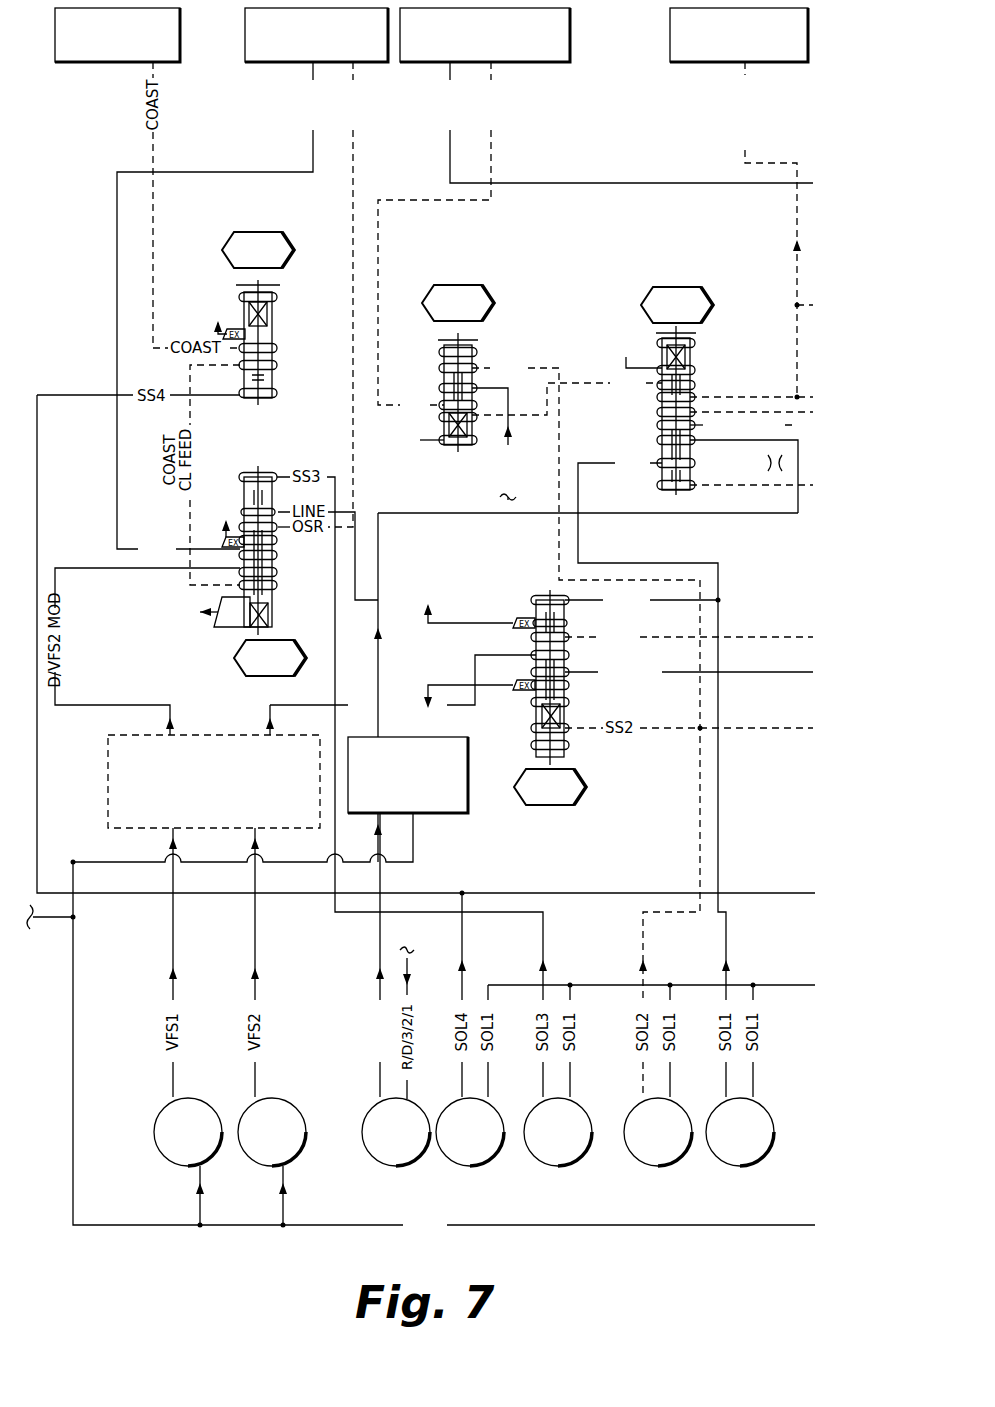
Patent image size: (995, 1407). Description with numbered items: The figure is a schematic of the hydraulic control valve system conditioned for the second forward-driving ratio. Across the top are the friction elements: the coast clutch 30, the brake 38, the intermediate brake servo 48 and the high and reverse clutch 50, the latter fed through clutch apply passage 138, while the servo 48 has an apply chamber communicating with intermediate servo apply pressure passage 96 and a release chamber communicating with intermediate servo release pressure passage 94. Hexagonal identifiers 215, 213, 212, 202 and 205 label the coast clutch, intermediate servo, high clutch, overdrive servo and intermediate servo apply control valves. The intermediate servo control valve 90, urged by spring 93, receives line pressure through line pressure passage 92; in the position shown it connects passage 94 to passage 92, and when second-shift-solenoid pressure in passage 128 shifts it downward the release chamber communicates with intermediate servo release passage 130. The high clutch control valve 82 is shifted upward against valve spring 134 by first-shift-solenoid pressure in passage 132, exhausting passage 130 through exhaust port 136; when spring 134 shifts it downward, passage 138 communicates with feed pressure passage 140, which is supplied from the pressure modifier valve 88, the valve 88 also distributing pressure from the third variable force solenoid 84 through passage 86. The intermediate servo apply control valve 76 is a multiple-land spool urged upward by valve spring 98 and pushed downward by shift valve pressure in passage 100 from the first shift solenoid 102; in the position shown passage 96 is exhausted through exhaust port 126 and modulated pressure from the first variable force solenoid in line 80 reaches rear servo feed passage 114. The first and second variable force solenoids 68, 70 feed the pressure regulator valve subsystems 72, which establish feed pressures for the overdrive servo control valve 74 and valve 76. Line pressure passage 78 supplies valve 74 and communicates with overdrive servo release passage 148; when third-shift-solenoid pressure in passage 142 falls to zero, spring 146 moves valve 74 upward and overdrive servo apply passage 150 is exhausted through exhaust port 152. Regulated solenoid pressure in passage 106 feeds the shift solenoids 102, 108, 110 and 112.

The coast clutch 30 is at (92, 64).
The brake 38 is at (287, 64).
The intermediate brake servo 48 is at (532, 64).
The clutch 50 is at (700, 64).
The clutch apply passage 138 is at (774, 163).
The intermediate servo apply pressure passage 96 is at (450, 168).
The intermediate servo release pressure passage 94 is at (491, 168).
The coast clutch control valve 215 is at (258, 293).
The intermediate servo control valve 213 is at (455, 271).
The high clutch control valve 212 is at (675, 285).
The overdrive servo control valve 202 is at (194, 657).
The ISA control valve 205 is at (550, 811).
The intermediate servo control valve 90 is at (437, 405).
The spring 93 is at (445, 432).
The line pressure passage 92 is at (514, 427).
The intermediate servo release passage 130 is at (590, 382).
The exhaust port 136 is at (662, 365).
The valve spring 134 is at (693, 348).
The high clutch control valve 82 is at (684, 399).
The feed pressure passage 140 is at (712, 440).
The passage 86 is at (778, 515).
The passage 100 is at (673, 598).
The passage 132 is at (726, 803).
The passage 128 is at (700, 803).
The overdrive servo apply passage 150 is at (117, 478).
The overdrive servo release passage 148 is at (342, 436).
The exhaust port 152 is at (222, 540).
The overdrive servo control valve 74 is at (267, 781).
The spring 146 is at (270, 627).
The passage 142 is at (380, 583).
The exhaust port 126 is at (520, 620).
The line 80 is at (485, 655).
The intermediate servo apply control valve 76 is at (531, 659).
The valve spring 98 is at (545, 715).
The rear servo feed passage 114 is at (757, 674).
The pressure regulator valve subsystems 72 is at (136, 828).
The pressure modifier valve 88 is at (432, 813).
The line pressure passage 78 is at (200, 863).
The passage 106 is at (770, 985).
The variable force solenoid 68 is at (168, 1163).
The variable force solenoid 70 is at (292, 1100).
The variable force solenoid 84 is at (378, 1163).
The shift solenoid 112 is at (458, 1163).
The shift solenoid 110 is at (542, 1163).
The shift solenoid 108 is at (640, 1163).
The shift solenoid 102 is at (722, 1163).